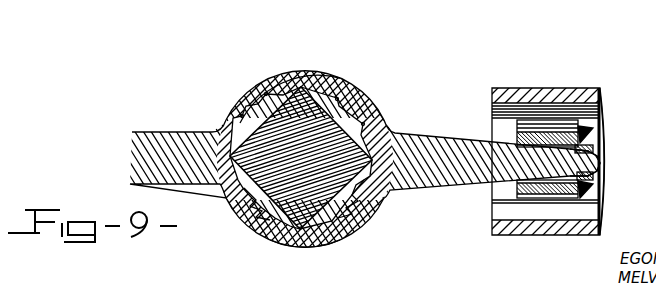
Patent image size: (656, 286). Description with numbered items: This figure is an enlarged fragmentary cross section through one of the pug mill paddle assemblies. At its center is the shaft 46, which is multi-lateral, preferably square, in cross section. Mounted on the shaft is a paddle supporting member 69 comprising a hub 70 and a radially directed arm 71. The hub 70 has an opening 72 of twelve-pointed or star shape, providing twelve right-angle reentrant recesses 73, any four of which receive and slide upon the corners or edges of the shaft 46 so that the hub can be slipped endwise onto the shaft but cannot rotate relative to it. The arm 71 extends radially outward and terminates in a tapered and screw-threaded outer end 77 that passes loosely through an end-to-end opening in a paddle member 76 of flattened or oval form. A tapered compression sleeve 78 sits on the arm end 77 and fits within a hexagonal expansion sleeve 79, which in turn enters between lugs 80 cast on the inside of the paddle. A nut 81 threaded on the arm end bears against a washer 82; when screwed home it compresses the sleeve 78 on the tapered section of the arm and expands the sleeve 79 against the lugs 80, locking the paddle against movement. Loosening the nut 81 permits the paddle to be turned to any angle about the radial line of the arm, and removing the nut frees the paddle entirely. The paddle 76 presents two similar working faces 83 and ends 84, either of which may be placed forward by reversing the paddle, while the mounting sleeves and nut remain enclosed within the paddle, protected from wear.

The shaft 46 is at (338, 98).
The paddle supporting member 69 is at (335, 53).
The hub 70 is at (325, 246).
The arm 71 is at (200, 187).
The opening 72 is at (254, 89).
The reentrant recess 73 is at (250, 205).
The paddle member 76 is at (604, 104).
The outer end of arm 77 is at (598, 147).
The tapered compression sleeve 78 is at (517, 140).
The expansion sleeve 79 is at (597, 128).
The lug 80 is at (520, 122).
The nut 81 is at (598, 175).
The washer 82 is at (590, 165).
The working face 83 is at (585, 65).
The end 84 is at (493, 222).